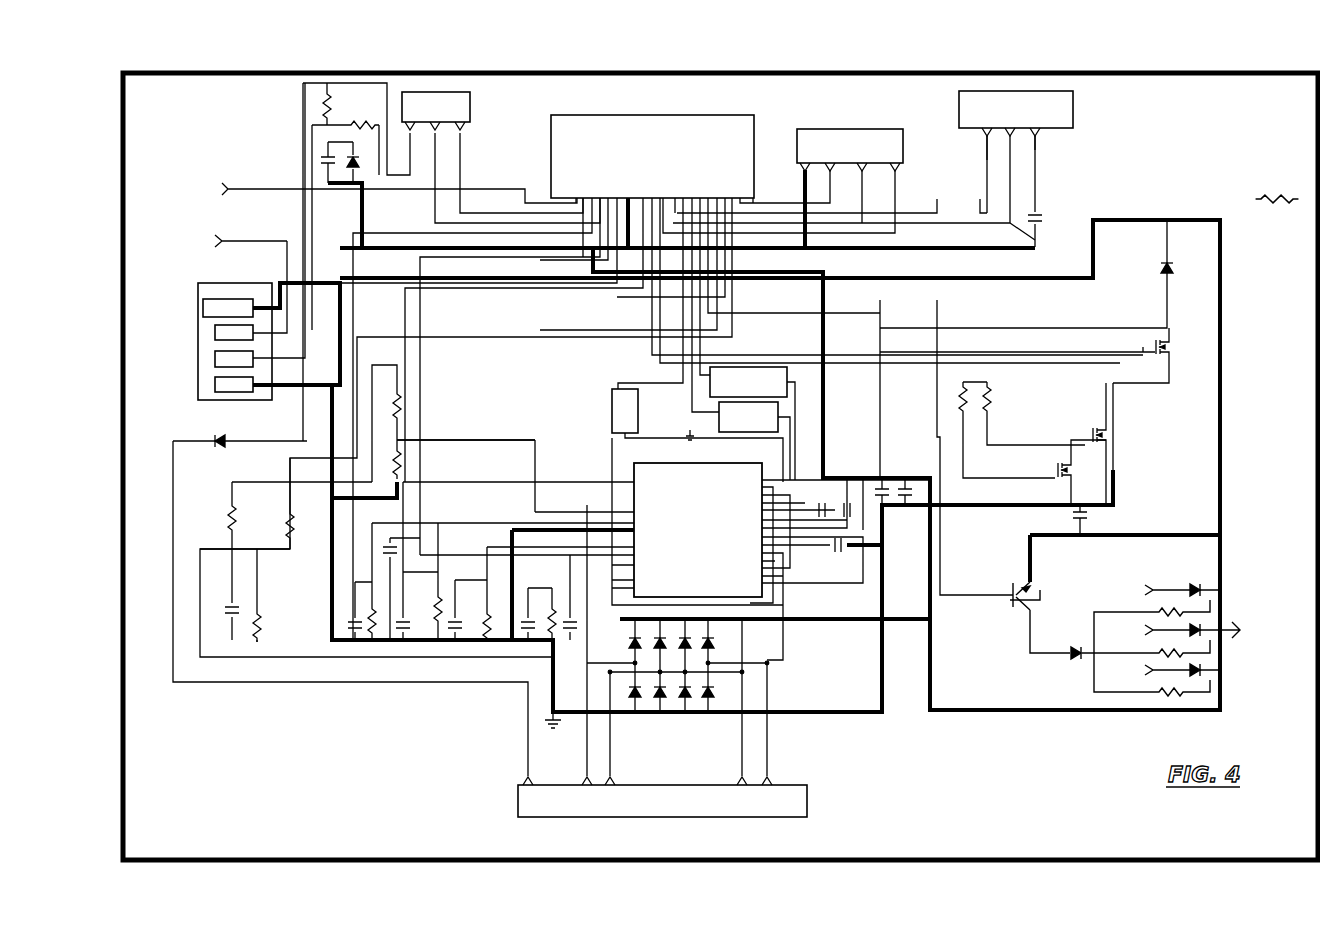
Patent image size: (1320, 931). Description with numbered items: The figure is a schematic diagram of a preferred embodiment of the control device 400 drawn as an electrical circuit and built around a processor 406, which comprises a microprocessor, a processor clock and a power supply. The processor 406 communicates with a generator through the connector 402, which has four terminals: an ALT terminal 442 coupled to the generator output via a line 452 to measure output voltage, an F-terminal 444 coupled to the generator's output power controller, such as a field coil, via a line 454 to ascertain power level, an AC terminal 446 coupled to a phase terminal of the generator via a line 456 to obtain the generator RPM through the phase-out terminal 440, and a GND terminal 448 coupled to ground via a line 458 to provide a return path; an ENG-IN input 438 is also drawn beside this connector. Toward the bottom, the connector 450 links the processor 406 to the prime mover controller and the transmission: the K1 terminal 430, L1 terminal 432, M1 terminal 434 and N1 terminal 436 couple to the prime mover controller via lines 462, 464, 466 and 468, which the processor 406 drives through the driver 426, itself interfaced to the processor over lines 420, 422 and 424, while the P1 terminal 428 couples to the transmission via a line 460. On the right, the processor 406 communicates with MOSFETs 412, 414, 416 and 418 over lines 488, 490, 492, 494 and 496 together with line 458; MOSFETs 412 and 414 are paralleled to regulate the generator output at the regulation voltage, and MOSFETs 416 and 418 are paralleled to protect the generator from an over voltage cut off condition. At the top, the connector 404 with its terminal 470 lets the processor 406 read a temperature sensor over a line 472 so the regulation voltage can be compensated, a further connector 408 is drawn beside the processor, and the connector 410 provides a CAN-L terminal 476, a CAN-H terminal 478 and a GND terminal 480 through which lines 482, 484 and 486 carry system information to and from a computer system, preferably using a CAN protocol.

The control device 400 is at (272, 70).
The connector 402 is at (201, 309).
The connector 404 is at (470, 103).
The processor 406 is at (551, 148).
The connector 408 is at (823, 128).
The connector 410 is at (1075, 97).
The MOSFET 412 is at (1172, 362).
The MOSFET 414 is at (1172, 385).
The MOSFET 416 is at (1108, 446).
The MOSFET 418 is at (1072, 479).
The line 420 is at (617, 384).
The line 422 is at (700, 388).
The line 424 is at (692, 390).
The driver 426 is at (747, 598).
The P1 terminal 428 is at (520, 779).
The K1 terminal 430 is at (580, 778).
The L1 terminal 432 is at (618, 778).
The M1 terminal 434 is at (737, 778).
The N1 terminal 436 is at (776, 778).
The engine input line 438 is at (295, 188).
The phase-out terminal 440 is at (285, 240).
The ALT terminal 442 is at (222, 299).
The F-terminal 444 is at (215, 334).
The AC terminal 446 is at (214, 358).
The GND terminal 448 is at (220, 392).
The connector 450 is at (808, 805).
The line 452 is at (432, 283).
The line 454 is at (263, 333).
The line 456 is at (268, 358).
The line 458 is at (320, 386).
The line 460 is at (283, 683).
The line 462 is at (585, 727).
The line 464 is at (615, 752).
The line 466 is at (744, 727).
The line 468 is at (771, 745).
The terminal 470 is at (410, 127).
The line 472 is at (393, 176).
The CAN-L terminal 476 is at (980, 132).
The CAN-H terminal 478 is at (1033, 142).
The GND terminal 480 is at (1073, 129).
The line 482 is at (987, 155).
The line 484 is at (1012, 222).
The line 486 is at (1037, 150).
The line 488 is at (997, 327).
The line 490 is at (1052, 353).
The line 492 is at (927, 364).
The line 494 is at (1070, 404).
The line 496 is at (877, 352).